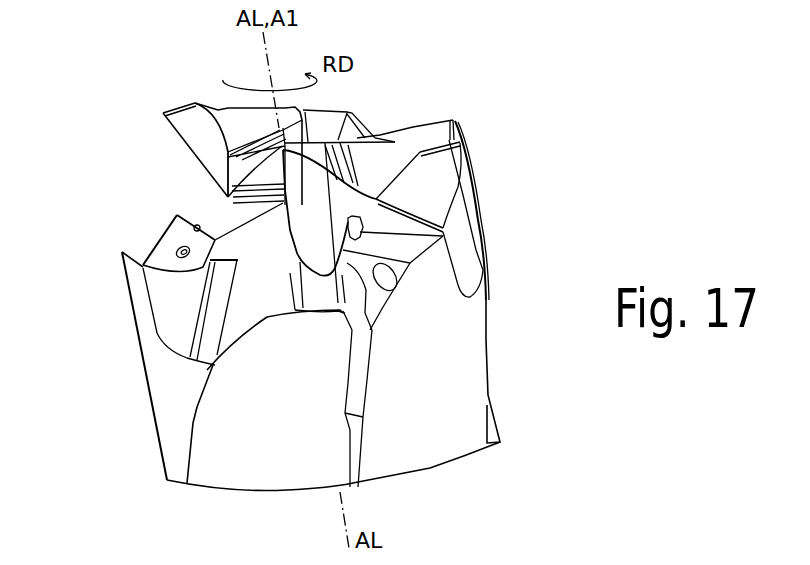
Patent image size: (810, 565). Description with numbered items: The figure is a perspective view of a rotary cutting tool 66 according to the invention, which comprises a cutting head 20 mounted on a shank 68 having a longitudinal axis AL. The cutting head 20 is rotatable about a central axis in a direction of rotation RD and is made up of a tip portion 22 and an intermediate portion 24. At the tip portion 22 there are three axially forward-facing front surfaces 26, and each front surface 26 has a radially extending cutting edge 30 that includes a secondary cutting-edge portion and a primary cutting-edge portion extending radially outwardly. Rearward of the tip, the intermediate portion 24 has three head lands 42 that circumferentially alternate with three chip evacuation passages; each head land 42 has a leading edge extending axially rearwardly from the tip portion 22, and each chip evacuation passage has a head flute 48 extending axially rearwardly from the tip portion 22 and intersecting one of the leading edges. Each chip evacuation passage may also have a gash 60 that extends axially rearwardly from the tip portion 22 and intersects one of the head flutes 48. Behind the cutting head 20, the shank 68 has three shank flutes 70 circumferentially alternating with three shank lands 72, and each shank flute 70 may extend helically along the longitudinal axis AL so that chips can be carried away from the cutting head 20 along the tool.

The cutting head 20 is at (163, 207).
The tip portion 22 is at (456, 120).
The intermediate portion 24 is at (490, 176).
The front surface 26 is at (390, 176).
The cutting edge 30 is at (205, 136).
The head land 42 is at (188, 312).
The head flute 48 is at (275, 307).
The gash 60 is at (325, 216).
The rotary cutting tool 66 is at (388, 115).
The shank 68 is at (127, 382).
The shank flute 70 is at (282, 443).
The shank land 72 is at (182, 409).